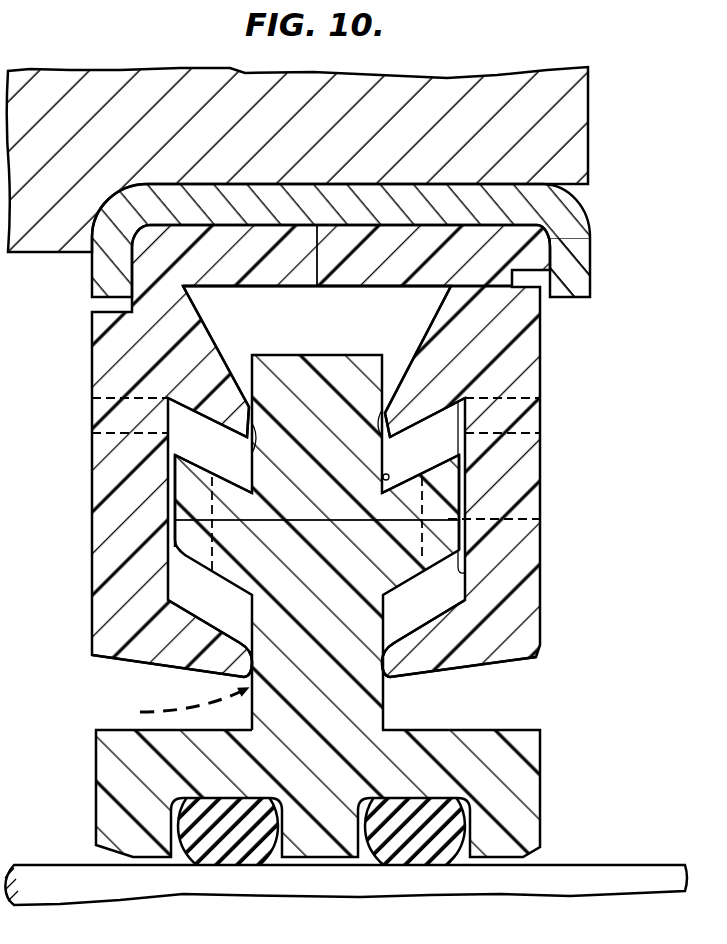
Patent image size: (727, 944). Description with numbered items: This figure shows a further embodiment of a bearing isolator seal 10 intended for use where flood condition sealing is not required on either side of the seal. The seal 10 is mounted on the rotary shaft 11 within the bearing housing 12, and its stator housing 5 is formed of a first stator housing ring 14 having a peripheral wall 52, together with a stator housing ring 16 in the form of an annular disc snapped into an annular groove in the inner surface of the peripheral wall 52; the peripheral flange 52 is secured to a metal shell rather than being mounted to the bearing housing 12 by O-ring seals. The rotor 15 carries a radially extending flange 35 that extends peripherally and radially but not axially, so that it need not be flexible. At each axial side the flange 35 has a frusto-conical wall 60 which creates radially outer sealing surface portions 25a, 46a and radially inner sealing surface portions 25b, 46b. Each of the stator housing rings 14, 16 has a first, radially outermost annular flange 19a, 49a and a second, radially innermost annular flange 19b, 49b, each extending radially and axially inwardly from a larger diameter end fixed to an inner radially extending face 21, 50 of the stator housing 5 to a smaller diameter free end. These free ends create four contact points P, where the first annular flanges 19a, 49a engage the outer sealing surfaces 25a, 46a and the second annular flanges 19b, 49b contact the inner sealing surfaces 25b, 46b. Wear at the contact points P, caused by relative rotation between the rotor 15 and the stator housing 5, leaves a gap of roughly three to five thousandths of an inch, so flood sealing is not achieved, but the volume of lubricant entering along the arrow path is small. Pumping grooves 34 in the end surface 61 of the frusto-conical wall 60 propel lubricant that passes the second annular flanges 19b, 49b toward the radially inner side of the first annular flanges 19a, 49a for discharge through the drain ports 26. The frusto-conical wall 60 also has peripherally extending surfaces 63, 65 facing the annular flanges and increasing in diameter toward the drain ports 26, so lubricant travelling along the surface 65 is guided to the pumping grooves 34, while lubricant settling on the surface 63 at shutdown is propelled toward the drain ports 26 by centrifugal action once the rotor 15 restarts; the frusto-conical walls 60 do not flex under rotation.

The bearing housing 12 is at (636, 101).
The peripheral wall 52 is at (543, 248).
The seal assembly 10 is at (639, 268).
The stator housing 5 is at (88, 349).
The first stator housing ring 14 is at (95, 468).
The stator housing ring 16 is at (597, 453).
The drain ports 26 is at (97, 413).
The first annular flange 19a is at (258, 300).
The first annular flange 49a is at (426, 334).
The second annular flange 19b is at (127, 657).
The second annular flange 49b is at (508, 685).
The radially extending flange 35 is at (339, 330).
The pumping grooves 34 is at (601, 514).
The rotor 15 is at (103, 762).
The rotary shaft 11 is at (40, 865).
The frusto-conical wall 60 is at (179, 450).
The end surface 61 is at (460, 452).
The peripherally extending surface 63 is at (196, 467).
The peripherally extending surface 65 is at (410, 586).
The inner radially extending face 50 is at (516, 570).
The inner radially extending face 21 is at (224, 579).
The radially outer sealing surface portion 25a is at (281, 333).
The radially inner sealing surface portion 25b is at (252, 605).
The radially outer sealing surface 46a is at (383, 465).
The radially inner sealing surface 46b is at (458, 705).
The contact points P is at (249, 453).